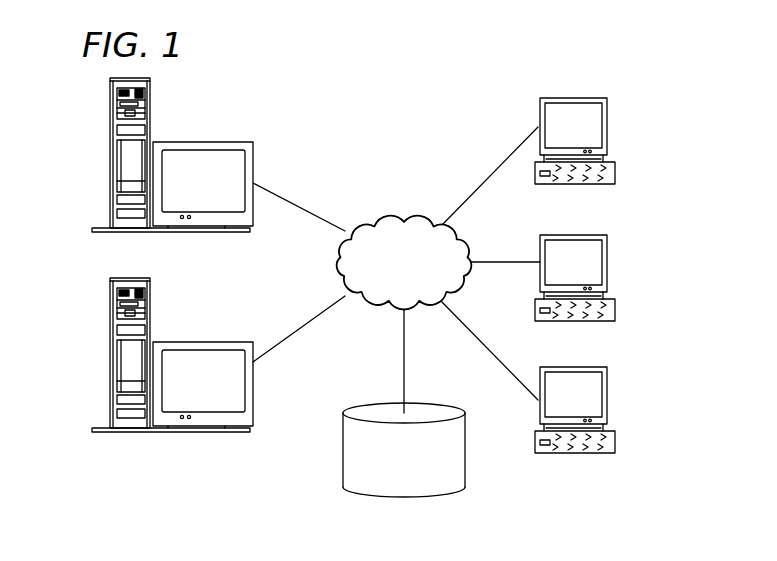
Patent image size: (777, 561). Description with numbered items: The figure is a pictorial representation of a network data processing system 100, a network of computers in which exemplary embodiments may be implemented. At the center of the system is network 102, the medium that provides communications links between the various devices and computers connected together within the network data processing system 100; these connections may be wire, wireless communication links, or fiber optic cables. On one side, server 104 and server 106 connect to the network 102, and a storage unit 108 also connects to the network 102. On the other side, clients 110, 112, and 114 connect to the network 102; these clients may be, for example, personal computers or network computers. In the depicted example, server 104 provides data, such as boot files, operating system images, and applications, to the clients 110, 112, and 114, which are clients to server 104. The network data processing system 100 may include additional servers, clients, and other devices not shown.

The network data processing system 100 is at (449, 110).
The network 102 is at (377, 213).
The server 104 is at (110, 157).
The server 106 is at (110, 360).
The storage unit 108 is at (386, 496).
The client 110 is at (607, 127).
The client 112 is at (607, 262).
The client 114 is at (607, 400).